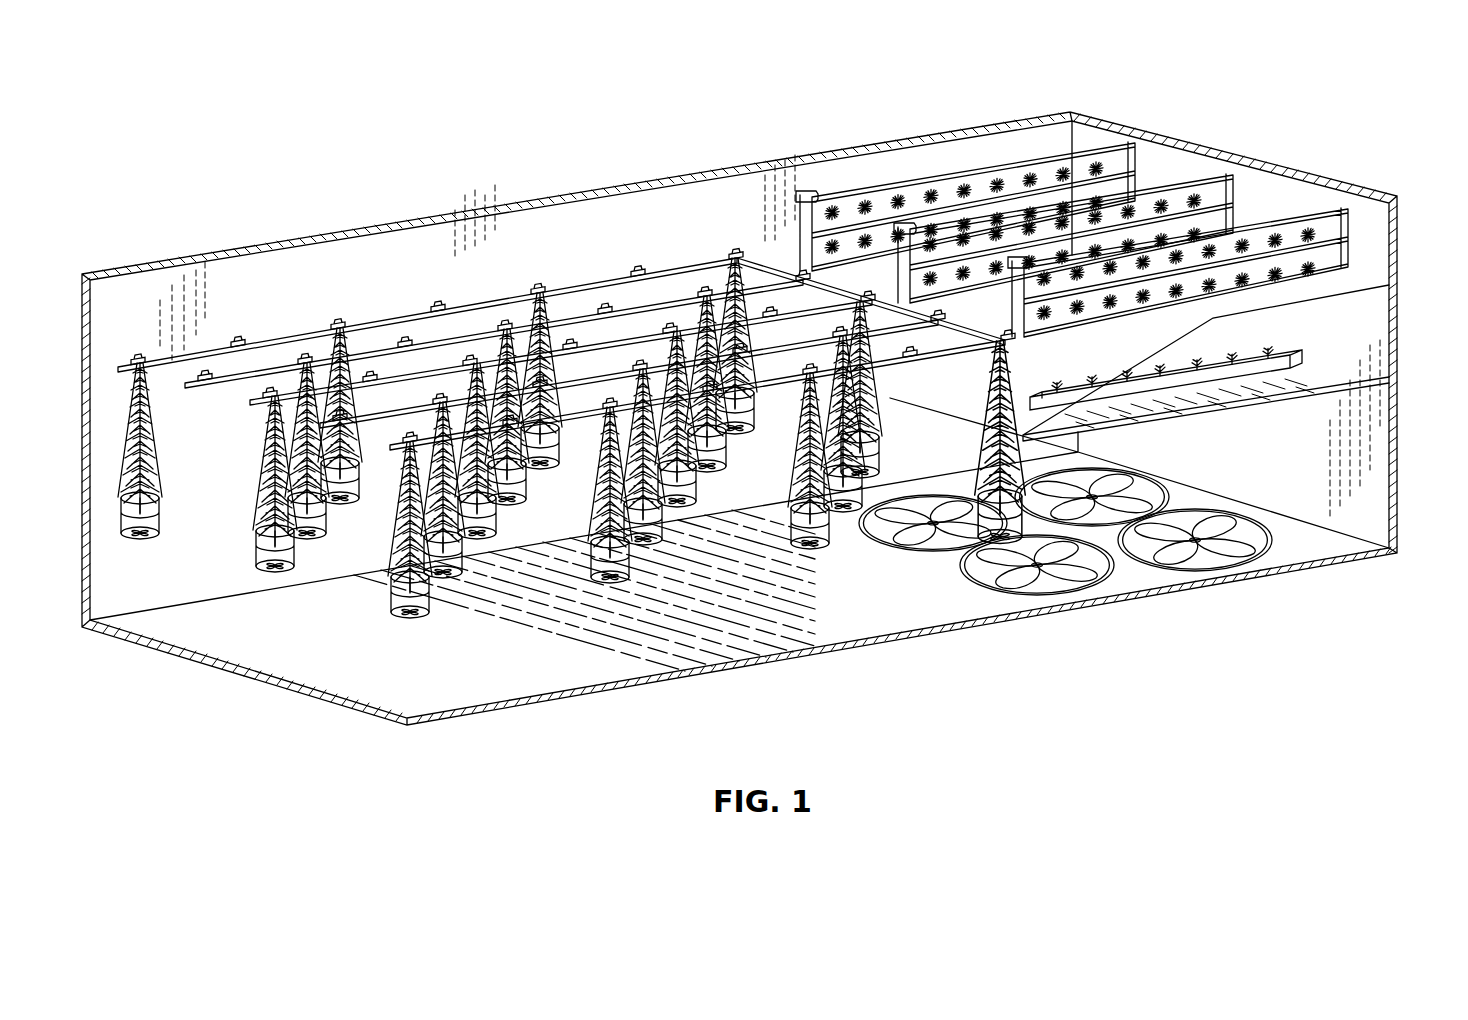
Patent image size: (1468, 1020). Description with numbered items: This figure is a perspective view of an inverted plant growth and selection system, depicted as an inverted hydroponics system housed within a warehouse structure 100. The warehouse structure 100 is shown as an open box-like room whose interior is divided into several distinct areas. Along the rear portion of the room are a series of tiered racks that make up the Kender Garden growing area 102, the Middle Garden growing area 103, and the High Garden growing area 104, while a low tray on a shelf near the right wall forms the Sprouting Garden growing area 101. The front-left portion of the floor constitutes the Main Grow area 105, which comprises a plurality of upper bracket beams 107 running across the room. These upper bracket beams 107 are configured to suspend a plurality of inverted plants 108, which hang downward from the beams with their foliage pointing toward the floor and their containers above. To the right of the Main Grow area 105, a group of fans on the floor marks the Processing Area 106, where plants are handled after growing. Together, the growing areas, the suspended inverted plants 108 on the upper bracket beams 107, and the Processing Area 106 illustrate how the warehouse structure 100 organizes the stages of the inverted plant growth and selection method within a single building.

The warehouse structure 100 is at (432, 168).
The Sprouting Garden growing area 101 is at (1292, 360).
The Kender Garden growing area 102 is at (1298, 216).
The Middle Garden growing area 103 is at (1012, 210).
The High Garden growing area 104 is at (878, 198).
The Main Grow area 105 is at (350, 560).
The Processing Area 106 is at (1190, 498).
The upper bracket beams 107 is at (470, 305).
The inverted plants 108 is at (614, 543).